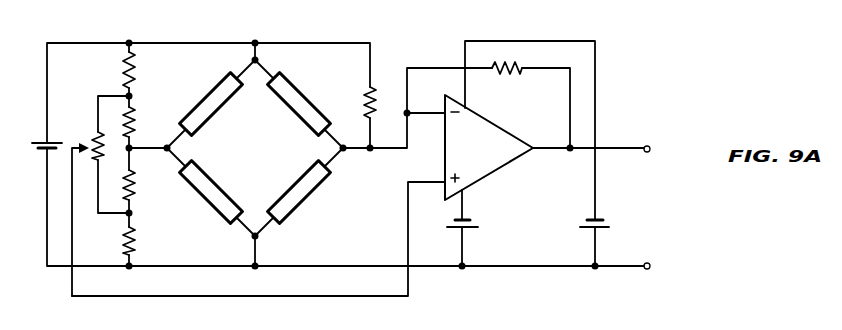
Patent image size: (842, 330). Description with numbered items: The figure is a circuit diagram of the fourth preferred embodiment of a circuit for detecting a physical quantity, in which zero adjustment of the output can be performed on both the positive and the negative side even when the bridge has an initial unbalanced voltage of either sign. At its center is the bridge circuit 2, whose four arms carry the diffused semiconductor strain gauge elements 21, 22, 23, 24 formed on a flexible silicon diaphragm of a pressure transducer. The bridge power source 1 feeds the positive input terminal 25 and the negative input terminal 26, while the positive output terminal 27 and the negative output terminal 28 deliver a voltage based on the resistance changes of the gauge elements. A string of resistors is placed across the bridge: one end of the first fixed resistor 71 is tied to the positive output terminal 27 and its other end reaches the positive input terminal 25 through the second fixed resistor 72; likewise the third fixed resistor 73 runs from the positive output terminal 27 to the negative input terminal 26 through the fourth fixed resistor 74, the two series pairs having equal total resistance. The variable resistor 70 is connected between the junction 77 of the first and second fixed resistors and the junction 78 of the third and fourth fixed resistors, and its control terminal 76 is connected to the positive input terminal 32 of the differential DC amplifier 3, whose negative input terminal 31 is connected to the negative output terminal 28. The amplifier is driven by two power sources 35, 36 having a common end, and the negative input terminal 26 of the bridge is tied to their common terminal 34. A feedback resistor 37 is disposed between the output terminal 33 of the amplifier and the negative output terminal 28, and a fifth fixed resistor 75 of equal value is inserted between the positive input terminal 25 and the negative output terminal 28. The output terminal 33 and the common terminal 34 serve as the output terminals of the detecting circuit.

The bridge power source 1 is at (41, 142).
The bridge circuit 2 is at (253, 154).
The differential DC amplifier 3 is at (484, 157).
The diffused semiconductor strain gauge element 21 is at (214, 86).
The diffused semiconductor strain gauge element 22 is at (226, 216).
The diffused semiconductor strain gauge element 23 is at (293, 210).
The diffused semiconductor strain gauge element 24 is at (298, 98).
The positive input terminal 25 is at (259, 63).
The negative input terminal 26 is at (259, 239).
The positive output terminal 27 is at (160, 152).
The negative output terminal 28 is at (347, 153).
The negative input terminal 31 is at (431, 109).
The positive input terminal 32 is at (422, 184).
The output terminal 33 is at (650, 146).
The common terminal 34 is at (650, 263).
The power source 35 is at (469, 223).
The power source 36 is at (603, 222).
The feedback resistor 37 is at (510, 76).
The variable resistor 70 is at (96, 131).
The first fixed resistor 71 is at (135, 121).
The second fixed resistor 72 is at (124, 74).
The third fixed resistor 73 is at (135, 190).
The fourth fixed resistor 74 is at (124, 243).
The fifth fixed resistor 75 is at (366, 107).
The control terminal 76 is at (76, 158).
The junction 77 is at (133, 96).
The junction 78 is at (134, 214).